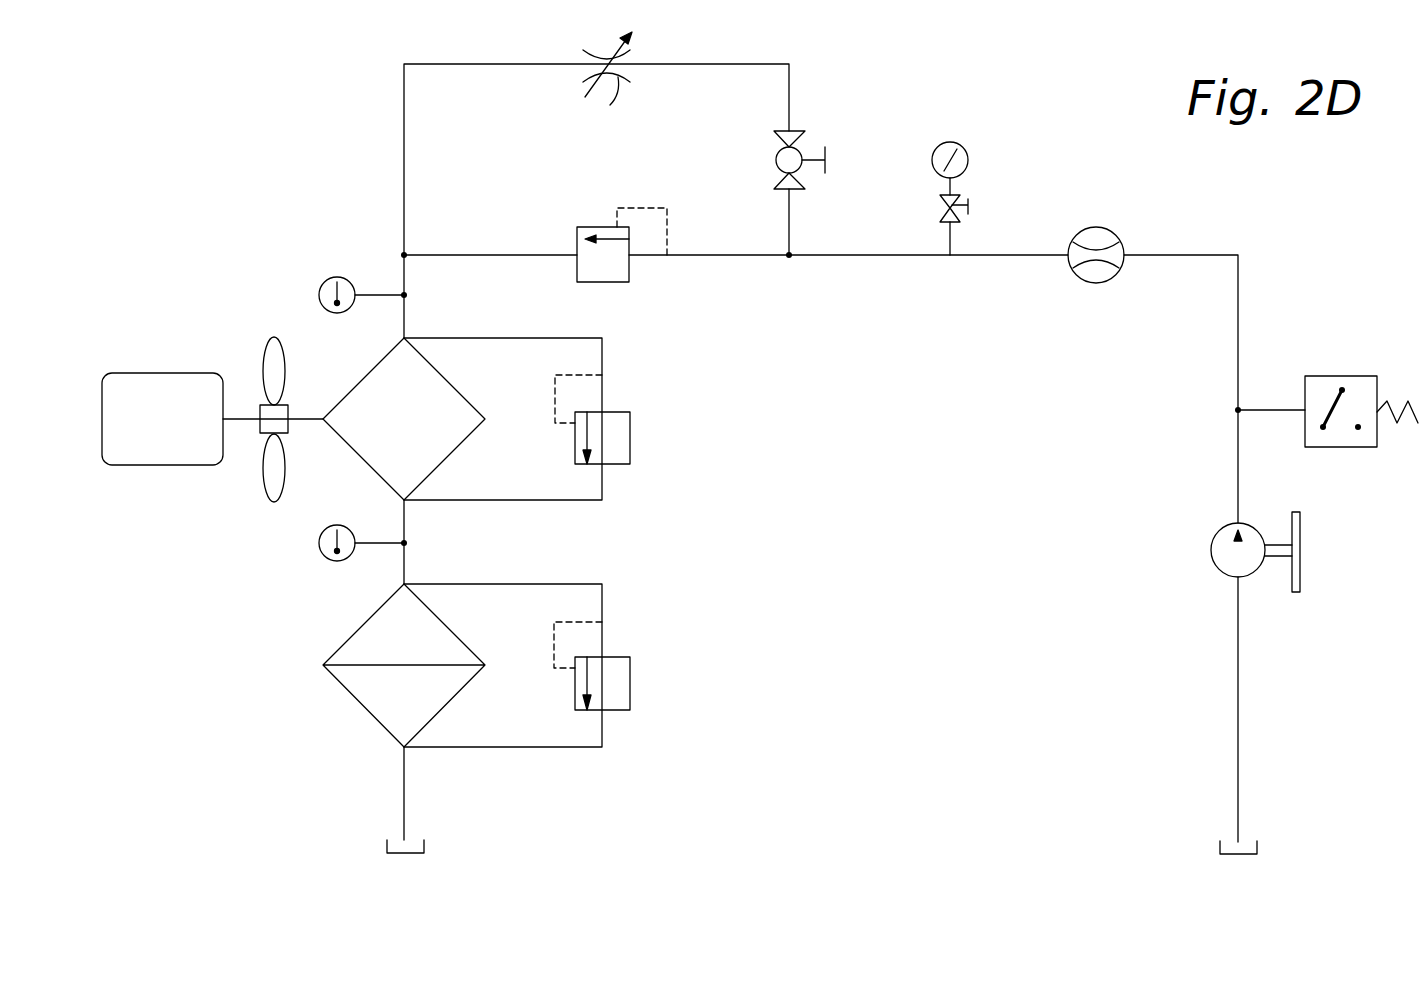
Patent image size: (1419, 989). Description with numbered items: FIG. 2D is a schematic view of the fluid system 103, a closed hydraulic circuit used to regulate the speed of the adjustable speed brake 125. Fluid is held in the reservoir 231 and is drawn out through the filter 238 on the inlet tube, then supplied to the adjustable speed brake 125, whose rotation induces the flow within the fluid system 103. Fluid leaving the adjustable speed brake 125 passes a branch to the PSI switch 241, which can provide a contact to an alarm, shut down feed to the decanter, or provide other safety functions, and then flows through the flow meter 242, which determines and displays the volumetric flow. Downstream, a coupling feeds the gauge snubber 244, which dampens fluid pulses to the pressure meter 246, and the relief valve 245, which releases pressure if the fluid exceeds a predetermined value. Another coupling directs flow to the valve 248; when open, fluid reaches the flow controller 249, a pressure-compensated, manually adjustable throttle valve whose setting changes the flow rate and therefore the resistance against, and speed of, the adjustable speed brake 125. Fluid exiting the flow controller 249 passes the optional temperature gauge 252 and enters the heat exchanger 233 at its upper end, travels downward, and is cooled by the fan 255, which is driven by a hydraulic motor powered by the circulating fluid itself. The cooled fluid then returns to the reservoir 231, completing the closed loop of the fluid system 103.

The fluid system 103 is at (265, 110).
The fan 255 is at (153, 373).
The temperature gauge 252 is at (318, 295).
The heat exchanger 233 is at (450, 455).
The filter 238 is at (450, 700).
The reservoir 231 is at (387, 846).
The flow controller 249 is at (607, 85).
The valve 248 is at (776, 160).
The relief valve 245 is at (613, 282).
The pressure meter 246 is at (952, 138).
The gauge snubber 244 is at (940, 210).
The flow meter 242 is at (1095, 227).
The PSI switch 241 is at (1358, 376).
The adjustable speed brake 125 is at (1211, 550).